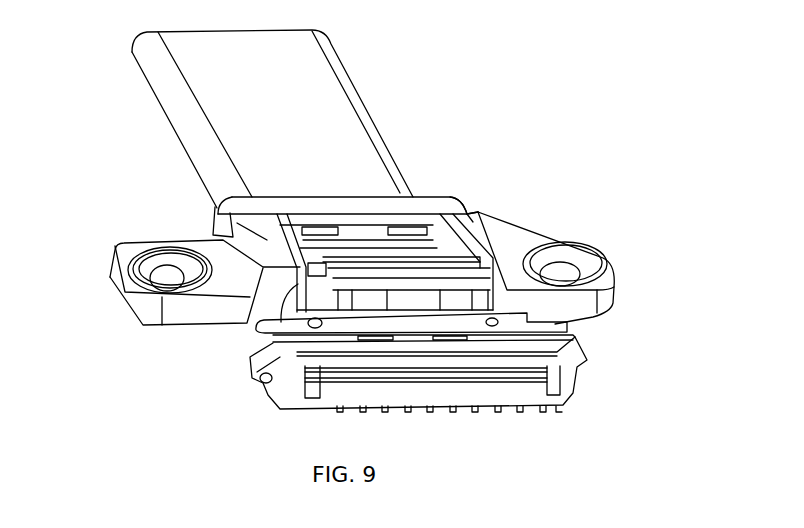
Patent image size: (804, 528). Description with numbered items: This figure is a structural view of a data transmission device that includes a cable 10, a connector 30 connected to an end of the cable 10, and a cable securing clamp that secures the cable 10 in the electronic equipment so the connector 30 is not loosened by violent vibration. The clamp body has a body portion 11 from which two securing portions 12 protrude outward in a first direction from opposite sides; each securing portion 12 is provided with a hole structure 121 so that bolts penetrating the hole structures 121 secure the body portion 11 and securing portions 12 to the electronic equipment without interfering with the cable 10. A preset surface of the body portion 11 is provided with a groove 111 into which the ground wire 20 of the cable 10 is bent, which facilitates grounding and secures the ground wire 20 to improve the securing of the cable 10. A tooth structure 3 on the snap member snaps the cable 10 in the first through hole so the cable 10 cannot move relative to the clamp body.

The cable 10 is at (320, 118).
The ground wire 20 is at (220, 218).
The body portion 11 is at (410, 200).
The groove 111 is at (465, 210).
The securing portion 12 is at (607, 282).
The hole structure 121 is at (565, 275).
The tooth structure 3 is at (273, 322).
The connector 30 is at (572, 343).